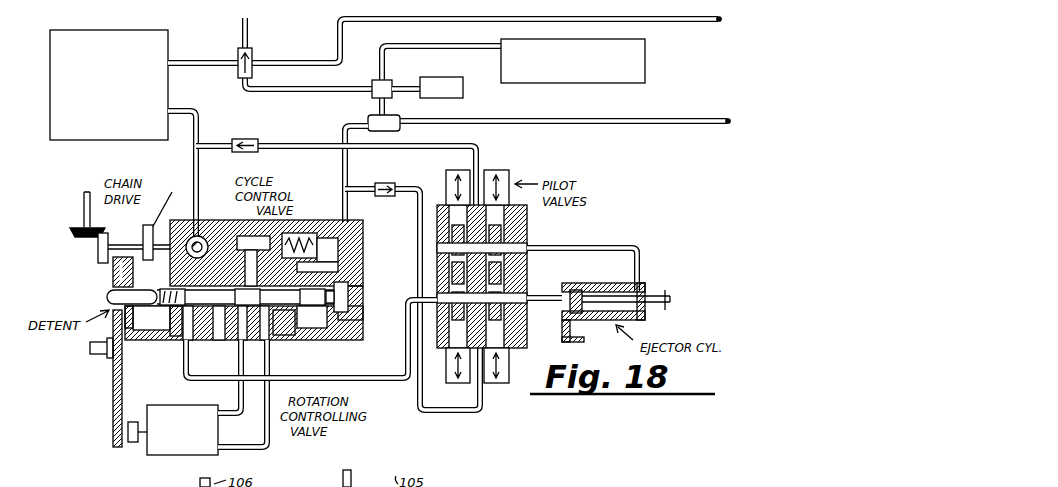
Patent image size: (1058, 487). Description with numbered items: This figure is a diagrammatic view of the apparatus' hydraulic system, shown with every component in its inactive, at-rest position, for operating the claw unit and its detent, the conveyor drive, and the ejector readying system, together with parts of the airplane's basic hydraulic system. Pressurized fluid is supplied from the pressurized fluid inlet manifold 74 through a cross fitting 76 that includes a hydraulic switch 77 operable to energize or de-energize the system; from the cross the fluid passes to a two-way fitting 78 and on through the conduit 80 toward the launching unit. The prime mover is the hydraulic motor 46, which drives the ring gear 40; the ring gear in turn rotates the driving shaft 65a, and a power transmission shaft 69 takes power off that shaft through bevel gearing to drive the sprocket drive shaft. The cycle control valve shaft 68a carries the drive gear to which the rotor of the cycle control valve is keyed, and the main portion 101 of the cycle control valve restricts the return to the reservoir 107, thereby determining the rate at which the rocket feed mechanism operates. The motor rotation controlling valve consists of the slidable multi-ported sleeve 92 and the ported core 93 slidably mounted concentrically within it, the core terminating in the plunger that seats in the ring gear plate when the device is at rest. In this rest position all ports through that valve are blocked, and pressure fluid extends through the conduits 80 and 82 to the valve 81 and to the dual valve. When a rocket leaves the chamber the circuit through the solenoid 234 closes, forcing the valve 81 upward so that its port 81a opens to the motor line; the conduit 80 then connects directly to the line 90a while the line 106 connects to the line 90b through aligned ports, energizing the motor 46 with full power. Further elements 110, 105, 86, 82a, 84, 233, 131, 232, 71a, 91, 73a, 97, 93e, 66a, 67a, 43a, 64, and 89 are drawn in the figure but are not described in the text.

The reservoir 107 is at (160, 45).
The check valve 110 is at (258, 82).
The cross fitting 76 is at (376, 80).
The hydraulic switch 77 is at (440, 85).
The pressurized fluid inlet manifold 74 is at (625, 80).
The two-way fitting 78 is at (368, 118).
The conduit 80 is at (343, 167).
The line 106 is at (186, 113).
The check valve conduit 105 is at (262, 140).
The conduit 86 is at (478, 167).
The conduit 82a is at (373, 183).
The conduit 82 is at (394, 184).
The valve 81 is at (437, 240).
The pilot valve spool 84 is at (527, 276).
The port 81a is at (418, 412).
The pilot valve 233 is at (452, 170).
The pilot valve 131 is at (509, 176).
The solenoid 234 is at (455, 384).
The pilot valve 232 is at (493, 384).
The bracket 71a is at (528, 333).
The cycle control valve body 91 is at (352, 228).
The main portion of cycle control valve 101 is at (214, 194).
The valve housing 73a is at (170, 335).
The sleeve 92 is at (317, 328).
The ported rod or core 93 is at (282, 332).
The spool rod 97 is at (107, 296).
The piston 93e is at (350, 293).
The power transmission shaft 69 is at (84, 195).
The cycle control valve shaft 68a is at (167, 211).
The driving shaft 65a is at (143, 242).
The flange 66a is at (98, 260).
The detent block 67a is at (150, 318).
The stub shaft 43a is at (122, 347).
The ring gear 40 is at (117, 448).
The coupling 64 is at (133, 422).
The hydraulic motor 46 is at (165, 455).
The line 90a is at (230, 346).
The line 90b is at (250, 450).
The conduit 89 is at (352, 358).